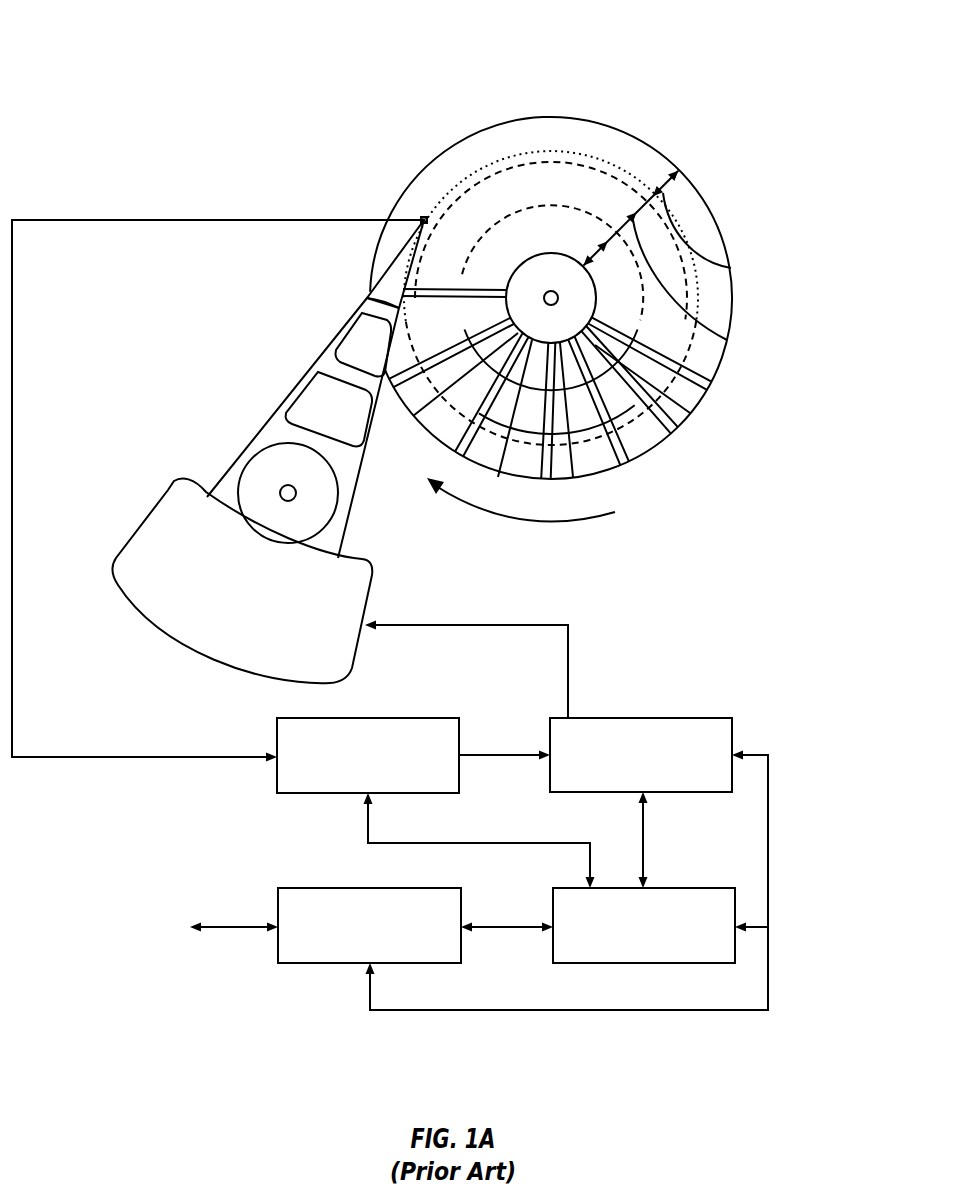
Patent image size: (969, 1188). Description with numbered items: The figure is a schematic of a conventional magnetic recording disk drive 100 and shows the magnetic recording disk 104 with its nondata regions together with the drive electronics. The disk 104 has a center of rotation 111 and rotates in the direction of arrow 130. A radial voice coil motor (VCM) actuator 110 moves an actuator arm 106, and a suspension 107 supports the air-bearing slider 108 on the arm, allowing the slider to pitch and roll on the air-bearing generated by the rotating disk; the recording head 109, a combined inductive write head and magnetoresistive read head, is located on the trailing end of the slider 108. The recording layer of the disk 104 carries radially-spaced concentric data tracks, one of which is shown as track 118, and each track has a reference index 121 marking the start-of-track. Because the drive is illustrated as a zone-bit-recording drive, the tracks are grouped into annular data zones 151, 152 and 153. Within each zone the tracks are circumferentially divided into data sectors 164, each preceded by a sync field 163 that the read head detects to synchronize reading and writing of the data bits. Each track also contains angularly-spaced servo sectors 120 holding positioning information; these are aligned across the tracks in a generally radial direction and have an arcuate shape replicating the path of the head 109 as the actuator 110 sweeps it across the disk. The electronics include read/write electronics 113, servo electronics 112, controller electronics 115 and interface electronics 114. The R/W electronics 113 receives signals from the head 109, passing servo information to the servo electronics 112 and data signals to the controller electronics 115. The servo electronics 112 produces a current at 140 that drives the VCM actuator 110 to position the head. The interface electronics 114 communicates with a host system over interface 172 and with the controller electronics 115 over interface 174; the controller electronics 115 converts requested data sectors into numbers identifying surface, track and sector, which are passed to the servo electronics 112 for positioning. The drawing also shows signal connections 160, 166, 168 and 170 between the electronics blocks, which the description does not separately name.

The disk drive 100 is at (116, 50).
The magnetic recording disk 104 is at (505, 122).
The actuator arm 106 is at (341, 327).
The suspension 107 is at (392, 273).
The air-bearing slider 108 is at (423, 217).
The recording head 109 is at (430, 212).
The voice coil motor actuator 110 is at (169, 486).
The center of rotation 111 is at (551, 291).
The servo electronics 112 is at (710, 718).
The read/write electronics 113 is at (436, 718).
The interface electronics 114 is at (302, 888).
The controller electronics 115 is at (573, 963).
The data track 118 is at (613, 195).
The servo sectors 120 is at (453, 457).
The reference index 121 is at (710, 386).
The direction of rotation 130 is at (563, 527).
The current 140 is at (568, 651).
The data zone 151 is at (731, 267).
The data zone 152 is at (728, 340).
The data zone 153 is at (600, 247).
The servo-controller signal line 160 is at (645, 843).
The sync fields 163 is at (450, 425).
The data sectors 164 is at (448, 430).
The read/write to servo signal line 166 is at (510, 758).
The controller to read/write signal line 168 is at (538, 842).
The controller signal line 170 is at (769, 850).
The interface 172 is at (208, 927).
The interface 174 is at (509, 927).